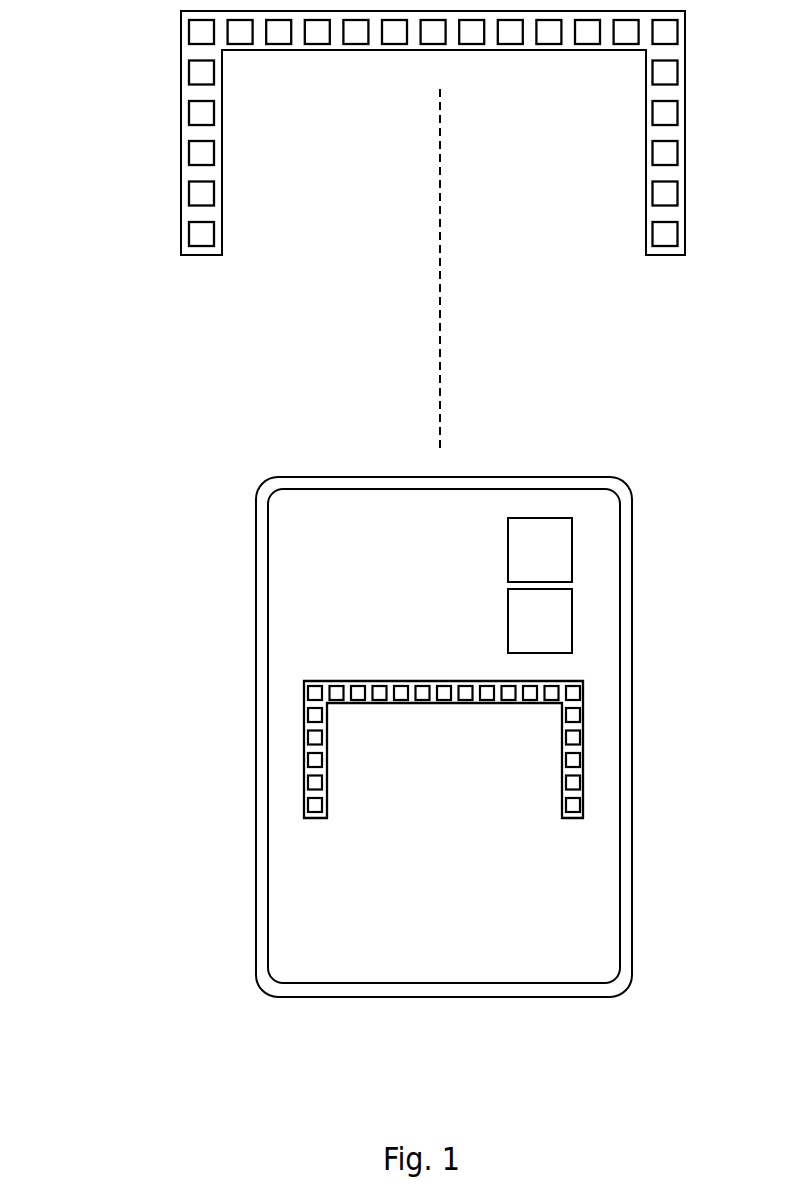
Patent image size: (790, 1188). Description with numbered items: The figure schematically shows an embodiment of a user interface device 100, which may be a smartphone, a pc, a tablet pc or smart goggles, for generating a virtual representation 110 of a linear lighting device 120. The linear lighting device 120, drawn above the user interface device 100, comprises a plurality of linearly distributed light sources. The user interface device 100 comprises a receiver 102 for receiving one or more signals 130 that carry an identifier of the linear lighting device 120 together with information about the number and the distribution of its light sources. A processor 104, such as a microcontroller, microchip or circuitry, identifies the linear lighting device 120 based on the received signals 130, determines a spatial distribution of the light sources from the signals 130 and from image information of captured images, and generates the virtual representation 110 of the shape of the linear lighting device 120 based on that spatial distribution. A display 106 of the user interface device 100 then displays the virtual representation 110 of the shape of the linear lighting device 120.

The user interface device 100 is at (264, 510).
The receiver 102 is at (529, 558).
The processor 104 is at (529, 626).
The display 106 is at (315, 889).
The virtual representation 110 is at (315, 780).
The linear lighting device 120 is at (190, 172).
The signals 130 is at (452, 247).